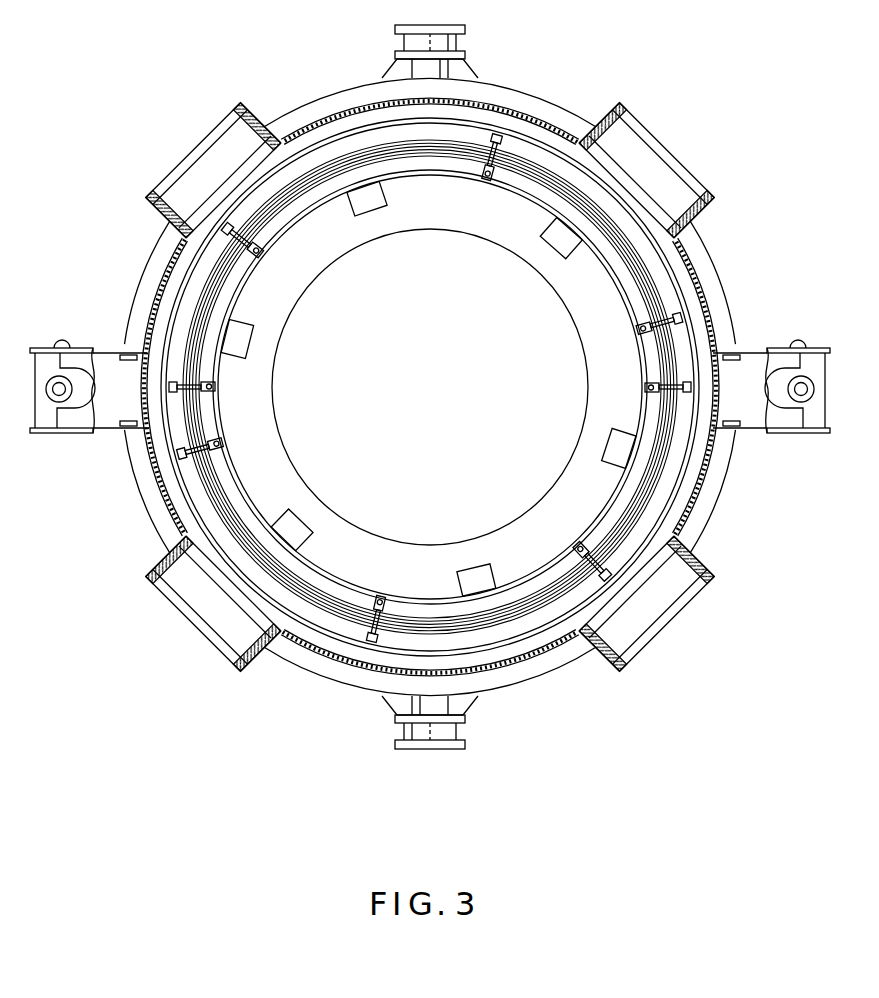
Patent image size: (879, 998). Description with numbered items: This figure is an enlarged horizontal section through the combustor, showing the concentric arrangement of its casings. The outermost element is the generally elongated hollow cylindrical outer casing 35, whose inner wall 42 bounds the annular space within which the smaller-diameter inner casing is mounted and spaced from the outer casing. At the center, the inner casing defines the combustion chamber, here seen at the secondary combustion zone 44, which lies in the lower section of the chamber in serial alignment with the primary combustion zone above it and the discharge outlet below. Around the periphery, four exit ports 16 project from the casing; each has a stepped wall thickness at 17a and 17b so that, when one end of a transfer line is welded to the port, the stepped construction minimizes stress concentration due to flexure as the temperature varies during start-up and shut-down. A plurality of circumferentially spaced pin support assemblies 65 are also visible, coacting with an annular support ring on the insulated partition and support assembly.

The exit port 16 is at (262, 145).
The stepped wall thickness portion 17a is at (252, 125).
The stepped wall thickness portion 17b is at (240, 115).
The outer casing 35 is at (714, 305).
The inner wall 42 is at (693, 267).
The secondary combustion zone 44 is at (442, 368).
The pin support assembly 65 is at (645, 322).